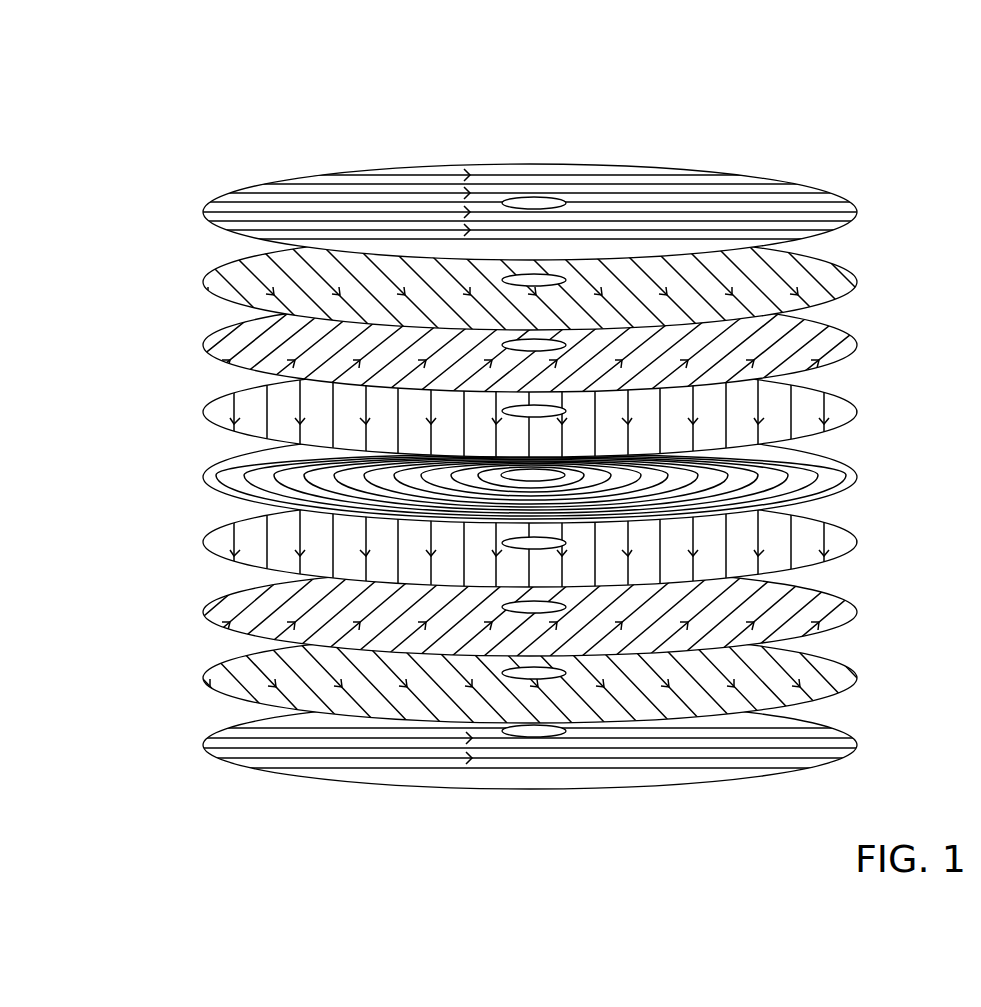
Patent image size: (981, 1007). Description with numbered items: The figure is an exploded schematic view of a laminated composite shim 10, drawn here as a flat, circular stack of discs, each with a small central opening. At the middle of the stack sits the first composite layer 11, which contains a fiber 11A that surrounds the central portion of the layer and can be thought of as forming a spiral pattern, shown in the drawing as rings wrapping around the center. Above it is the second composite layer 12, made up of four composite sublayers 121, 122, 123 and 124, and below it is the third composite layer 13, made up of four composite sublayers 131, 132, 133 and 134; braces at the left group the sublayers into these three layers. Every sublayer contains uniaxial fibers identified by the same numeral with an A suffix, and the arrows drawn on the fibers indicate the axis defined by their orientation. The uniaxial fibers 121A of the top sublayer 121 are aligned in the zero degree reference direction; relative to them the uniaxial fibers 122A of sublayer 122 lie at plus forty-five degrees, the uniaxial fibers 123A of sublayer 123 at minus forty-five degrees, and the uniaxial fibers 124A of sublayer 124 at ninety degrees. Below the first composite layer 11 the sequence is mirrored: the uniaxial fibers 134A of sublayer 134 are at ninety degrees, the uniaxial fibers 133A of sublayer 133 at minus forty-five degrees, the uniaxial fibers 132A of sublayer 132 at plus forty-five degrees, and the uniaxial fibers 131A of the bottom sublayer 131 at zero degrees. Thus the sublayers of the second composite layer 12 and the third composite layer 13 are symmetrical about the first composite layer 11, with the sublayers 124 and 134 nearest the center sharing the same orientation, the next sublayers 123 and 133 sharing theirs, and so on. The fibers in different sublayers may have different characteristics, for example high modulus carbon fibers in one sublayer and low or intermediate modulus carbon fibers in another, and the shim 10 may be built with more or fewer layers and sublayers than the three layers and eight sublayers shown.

The composite shim 10 is at (287, 153).
The first composite layer 11 is at (173, 440).
The fiber 11A is at (810, 473).
The second composite layer 12 is at (173, 193).
The third composite layer 13 is at (173, 525).
The composite sublayer 121 is at (562, 205).
The uniaxial fibers 121A is at (788, 195).
The composite sublayer 122 is at (523, 281).
The uniaxial fibers 122A is at (817, 273).
The composite sublayer 123 is at (543, 344).
The uniaxial fibers 123A is at (838, 347).
The composite sublayer 124 is at (564, 411).
The uniaxial fibers 124A is at (823, 410).
The composite sublayer 131 is at (567, 740).
The uniaxial fibers 131A is at (833, 732).
The composite sublayer 132 is at (529, 677).
The uniaxial fibers 132A is at (832, 673).
The composite sublayer 133 is at (536, 607).
The uniaxial fibers 133A is at (832, 615).
The composite sublayer 134 is at (562, 540).
The uniaxial fibers 134A is at (825, 537).